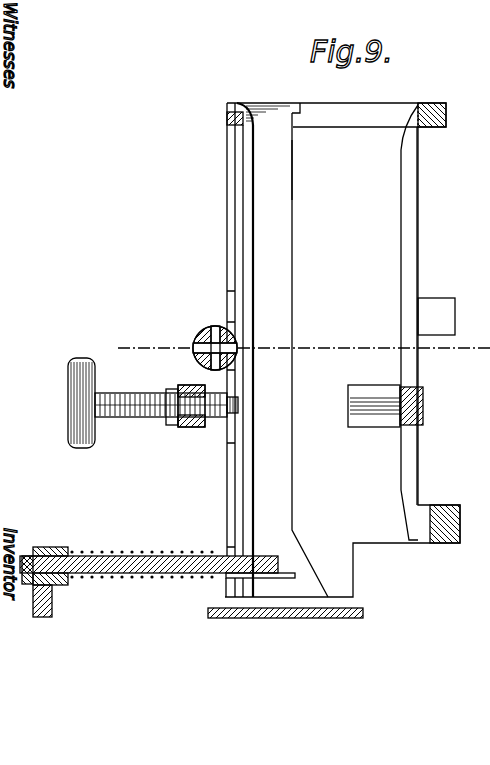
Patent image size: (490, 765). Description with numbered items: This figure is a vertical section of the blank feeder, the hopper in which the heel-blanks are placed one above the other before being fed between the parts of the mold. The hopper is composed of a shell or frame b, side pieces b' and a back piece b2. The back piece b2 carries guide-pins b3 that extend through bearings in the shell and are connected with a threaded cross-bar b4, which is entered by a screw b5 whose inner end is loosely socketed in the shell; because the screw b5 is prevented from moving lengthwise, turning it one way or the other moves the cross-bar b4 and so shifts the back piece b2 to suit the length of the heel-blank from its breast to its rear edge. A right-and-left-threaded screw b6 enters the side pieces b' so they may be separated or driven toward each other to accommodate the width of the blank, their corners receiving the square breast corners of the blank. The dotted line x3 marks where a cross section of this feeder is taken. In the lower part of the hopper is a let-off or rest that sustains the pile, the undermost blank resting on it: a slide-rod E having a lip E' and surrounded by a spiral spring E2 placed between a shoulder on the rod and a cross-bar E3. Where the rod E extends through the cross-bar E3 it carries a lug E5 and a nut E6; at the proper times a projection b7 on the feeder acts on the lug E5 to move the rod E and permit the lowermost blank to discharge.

The shell or frame b is at (342, 343).
The side pieces b' is at (299, 170).
The back piece b2 is at (411, 257).
The guide-pins b3 is at (365, 399).
The threaded cross-bar b4 is at (192, 427).
The screw b5 is at (153, 403).
The right-and-left-threaded screw b6 is at (202, 332).
The projection b7 is at (285, 624).
The dotted line x3 is at (304, 349).
The slide-rod E is at (149, 554).
The lip E' is at (278, 555).
The spiral spring E2 is at (119, 553).
The cross-bar E3 is at (60, 548).
The lug E5 is at (52, 606).
The nut E6 is at (44, 552).